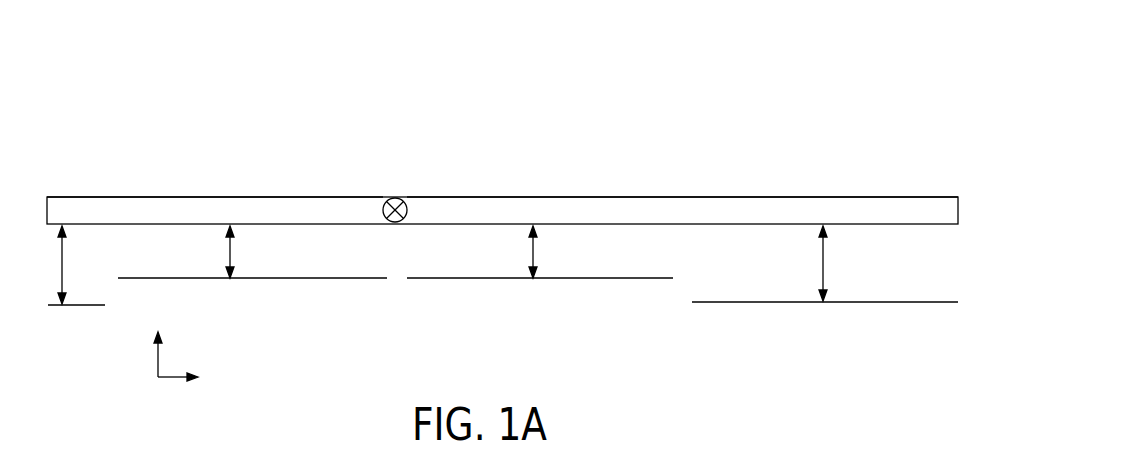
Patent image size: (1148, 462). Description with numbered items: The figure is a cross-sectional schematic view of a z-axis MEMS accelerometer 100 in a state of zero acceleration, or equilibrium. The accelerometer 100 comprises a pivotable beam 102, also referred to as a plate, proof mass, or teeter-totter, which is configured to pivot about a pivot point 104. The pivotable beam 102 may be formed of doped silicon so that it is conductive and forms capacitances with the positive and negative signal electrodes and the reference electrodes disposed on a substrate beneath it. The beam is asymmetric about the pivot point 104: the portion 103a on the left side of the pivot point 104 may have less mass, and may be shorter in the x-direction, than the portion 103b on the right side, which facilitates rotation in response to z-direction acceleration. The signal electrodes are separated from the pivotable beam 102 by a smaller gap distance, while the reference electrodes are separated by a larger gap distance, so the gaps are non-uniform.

The z-axis MEMS accelerometer 100 is at (724, 84).
The pivotable beam 102 is at (103, 196).
The portion of the pivotable beam on the left side of the pivot point 103a is at (215, 210).
The portion of the pivotable beam on the right side of the pivot point 103b is at (682, 210).
The pivot point 104 is at (385, 200).